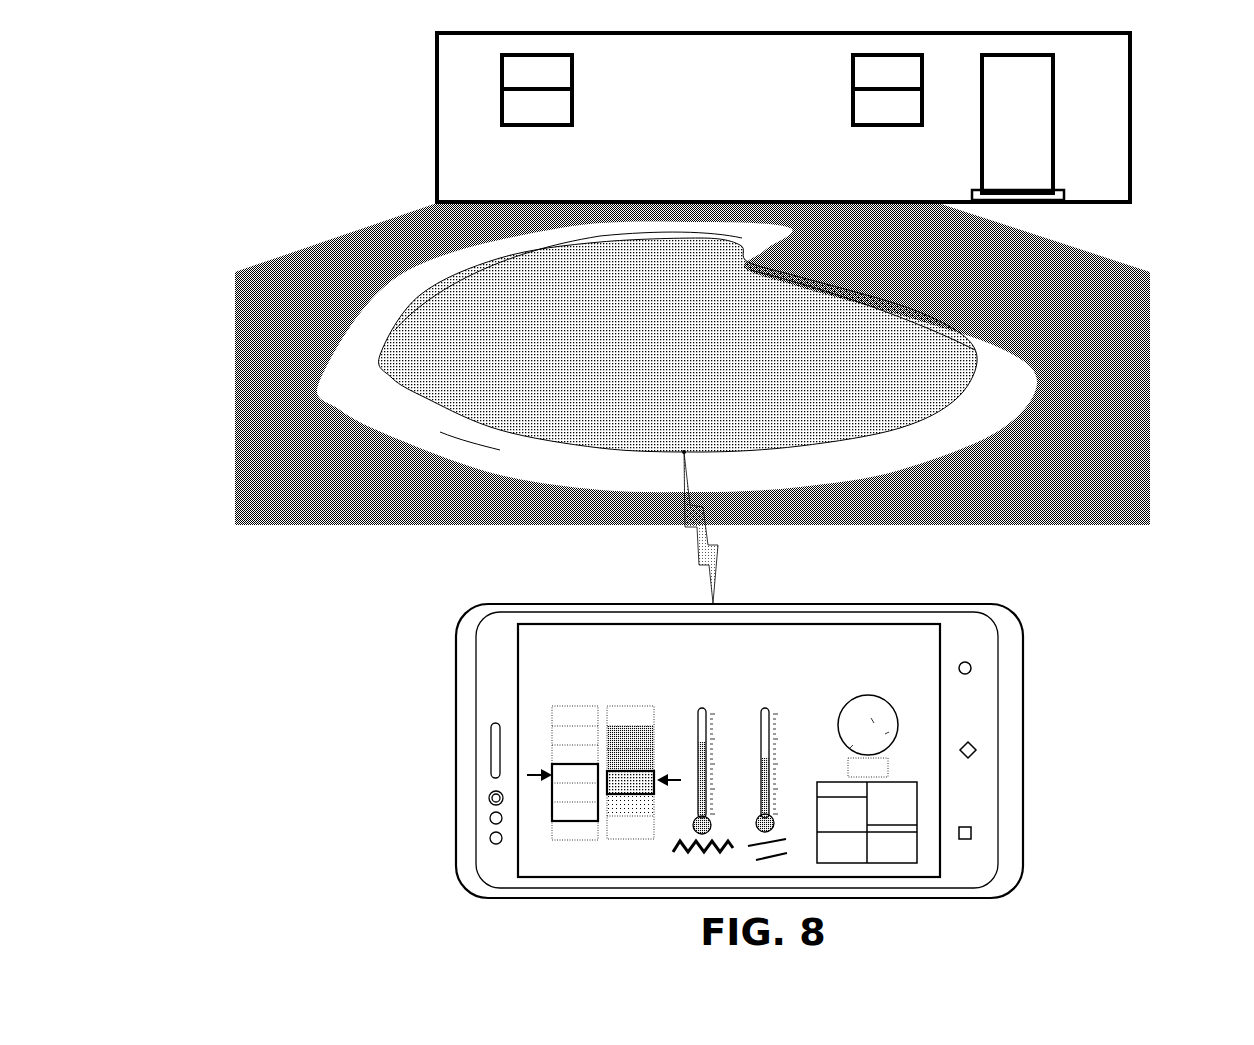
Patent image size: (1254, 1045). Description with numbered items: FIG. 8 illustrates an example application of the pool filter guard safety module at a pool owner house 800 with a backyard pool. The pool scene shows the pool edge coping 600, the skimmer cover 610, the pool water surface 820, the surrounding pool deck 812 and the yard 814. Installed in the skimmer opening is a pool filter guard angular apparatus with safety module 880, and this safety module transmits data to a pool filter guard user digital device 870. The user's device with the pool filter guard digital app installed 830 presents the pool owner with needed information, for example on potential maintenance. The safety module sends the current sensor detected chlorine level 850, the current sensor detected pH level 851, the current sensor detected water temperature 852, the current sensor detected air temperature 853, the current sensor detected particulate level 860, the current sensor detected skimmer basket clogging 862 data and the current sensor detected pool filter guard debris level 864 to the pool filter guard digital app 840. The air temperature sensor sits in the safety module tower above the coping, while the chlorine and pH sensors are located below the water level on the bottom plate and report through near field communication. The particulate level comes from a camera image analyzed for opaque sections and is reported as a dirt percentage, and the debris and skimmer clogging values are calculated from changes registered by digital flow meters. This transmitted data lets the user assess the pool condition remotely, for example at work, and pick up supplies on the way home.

The pool owner house 800 is at (1130, 105).
The pool deck 812 is at (1005, 380).
The yard 814 is at (1137, 496).
The pool water surface 820 is at (423, 352).
The pool edge coping 600 is at (448, 430).
The skimmer cover 610 is at (684, 452).
The pool filter guard user digital device 870 is at (717, 547).
The pool filter guard angular apparatus with safety module 880 is at (684, 452).
The pool filter guard user digital device with pool filter guard digital app install 830 is at (1015, 750).
The pool filter guard digital app 840 is at (558, 664).
The current sensor detected chlorine level 850 is at (543, 780).
The current sensor detected pH level 851 is at (660, 790).
The current sensor detected water temperature 852 is at (677, 838).
The current sensor detected air temperature 853 is at (765, 833).
The current sensor detected particulate level 860 is at (893, 705).
The current sensor detected skimmer basket clogging 862 is at (907, 815).
The current sensor detected pool filter guard debris level 864 is at (858, 848).